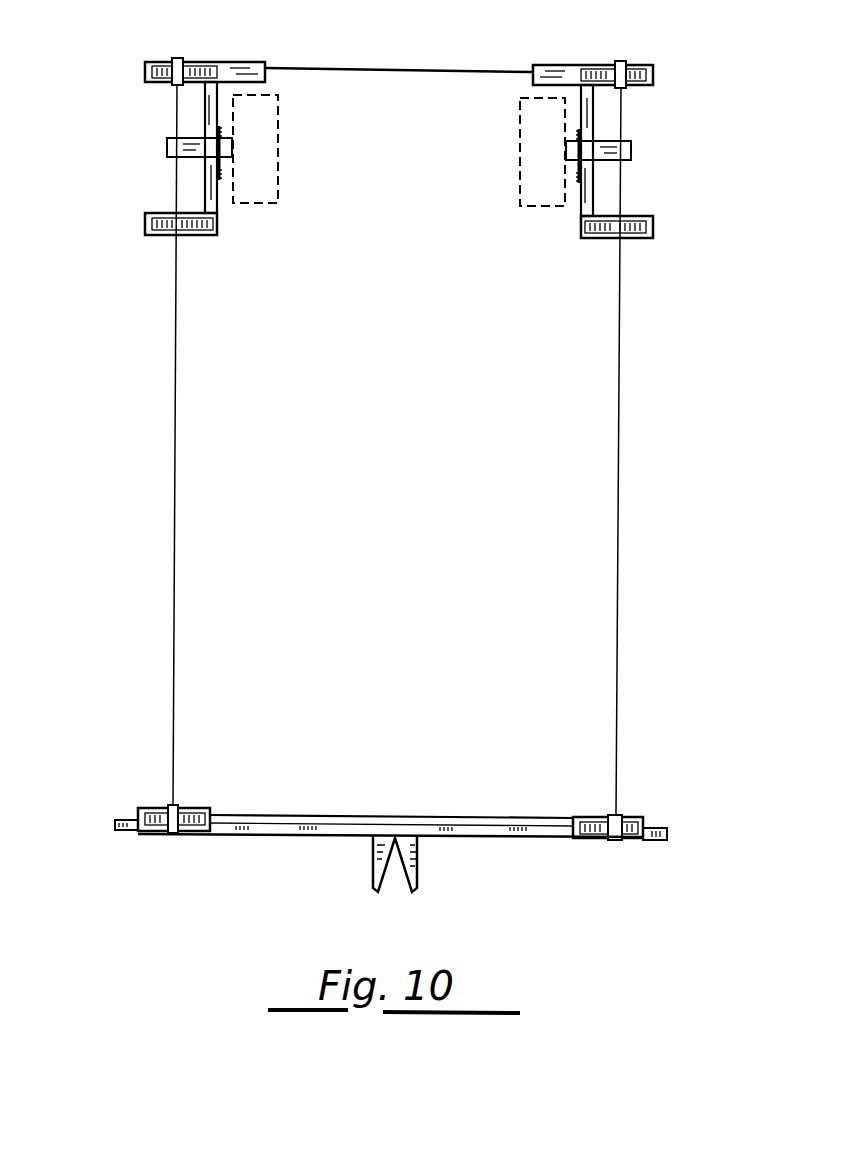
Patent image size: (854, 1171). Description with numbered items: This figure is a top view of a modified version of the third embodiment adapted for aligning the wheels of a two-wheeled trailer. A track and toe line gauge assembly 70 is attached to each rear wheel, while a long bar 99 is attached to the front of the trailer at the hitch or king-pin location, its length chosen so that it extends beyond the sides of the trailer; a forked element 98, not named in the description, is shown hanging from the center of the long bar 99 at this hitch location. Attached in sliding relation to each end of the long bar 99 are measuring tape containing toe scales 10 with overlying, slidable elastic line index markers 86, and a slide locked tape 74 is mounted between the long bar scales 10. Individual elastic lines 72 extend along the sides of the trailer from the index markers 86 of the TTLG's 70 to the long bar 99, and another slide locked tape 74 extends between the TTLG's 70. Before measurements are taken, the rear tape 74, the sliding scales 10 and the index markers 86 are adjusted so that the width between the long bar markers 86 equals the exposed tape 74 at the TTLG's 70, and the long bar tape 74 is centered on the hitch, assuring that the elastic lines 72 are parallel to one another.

The toe scale 10 is at (157, 62).
The track and toe line gauge assembly 70 is at (140, 130).
The elastic line 72 is at (176, 503).
The measuring tape 74 is at (375, 72).
The sliding index marker 86 is at (178, 58).
The forked prong 98 is at (418, 862).
The long bar 99 is at (305, 836).